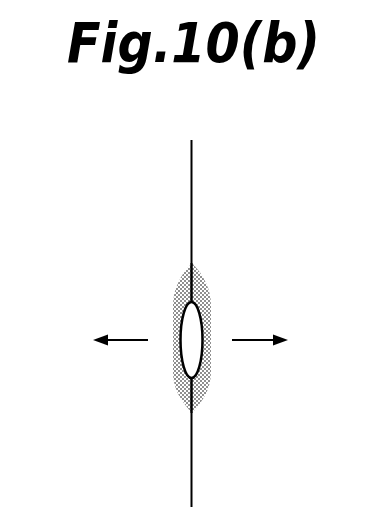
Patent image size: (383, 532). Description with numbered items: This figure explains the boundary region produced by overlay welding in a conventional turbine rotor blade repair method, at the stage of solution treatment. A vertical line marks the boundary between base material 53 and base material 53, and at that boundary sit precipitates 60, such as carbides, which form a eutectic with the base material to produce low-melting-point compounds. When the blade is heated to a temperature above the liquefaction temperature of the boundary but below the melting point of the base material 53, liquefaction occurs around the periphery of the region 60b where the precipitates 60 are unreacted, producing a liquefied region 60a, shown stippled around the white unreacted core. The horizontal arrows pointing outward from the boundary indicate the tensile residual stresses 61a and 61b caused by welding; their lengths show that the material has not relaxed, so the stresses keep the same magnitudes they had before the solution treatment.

The base material 53 is at (153, 503).
The precipitates 60 is at (261, 357).
The liquefied region 60a is at (203, 387).
The region where the precipitates are unreacted 60b is at (193, 348).
The tensile residual stress 61a is at (133, 338).
The tensile residual stress 61b is at (252, 338).